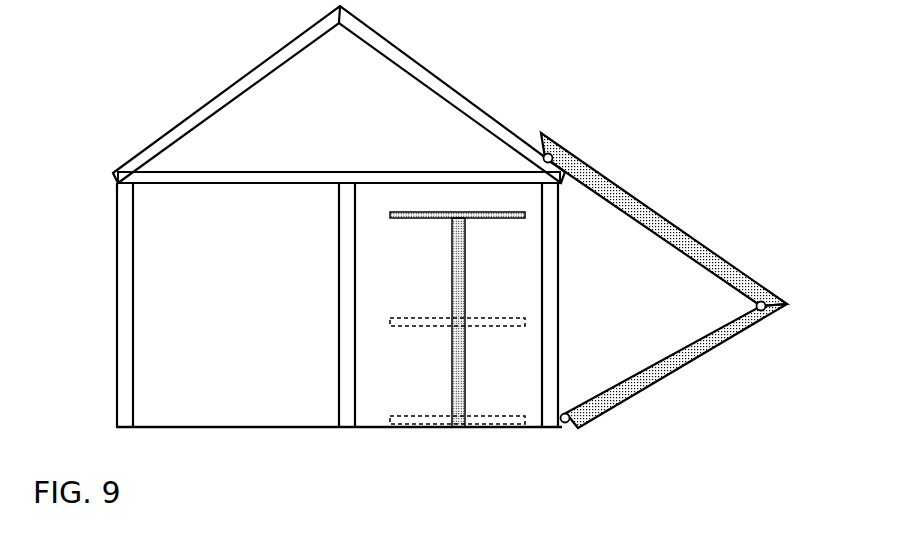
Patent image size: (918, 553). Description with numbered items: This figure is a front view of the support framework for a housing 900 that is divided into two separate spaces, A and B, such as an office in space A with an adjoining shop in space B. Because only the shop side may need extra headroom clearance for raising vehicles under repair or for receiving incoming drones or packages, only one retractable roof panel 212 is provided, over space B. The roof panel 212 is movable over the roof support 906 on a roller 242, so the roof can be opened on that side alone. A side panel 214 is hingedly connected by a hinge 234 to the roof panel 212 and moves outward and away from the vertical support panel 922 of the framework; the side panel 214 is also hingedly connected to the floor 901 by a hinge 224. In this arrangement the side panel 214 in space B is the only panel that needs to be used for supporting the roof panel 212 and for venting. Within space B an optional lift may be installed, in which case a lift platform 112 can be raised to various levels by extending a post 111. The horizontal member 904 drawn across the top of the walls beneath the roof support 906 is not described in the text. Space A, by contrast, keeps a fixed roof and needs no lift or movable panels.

The housing 900 is at (129, 80).
The roof support 906 is at (432, 81).
The top beam 904 is at (188, 178).
The floor 901 is at (373, 430).
The vertical support panel 922 is at (553, 243).
The lift platform 112 is at (440, 218).
The post 111 is at (458, 400).
The roof panel 212 is at (610, 182).
The side panel 214 is at (673, 370).
The roller 242 is at (541, 152).
The hinge 234 is at (756, 306).
The hinge 224 is at (568, 413).